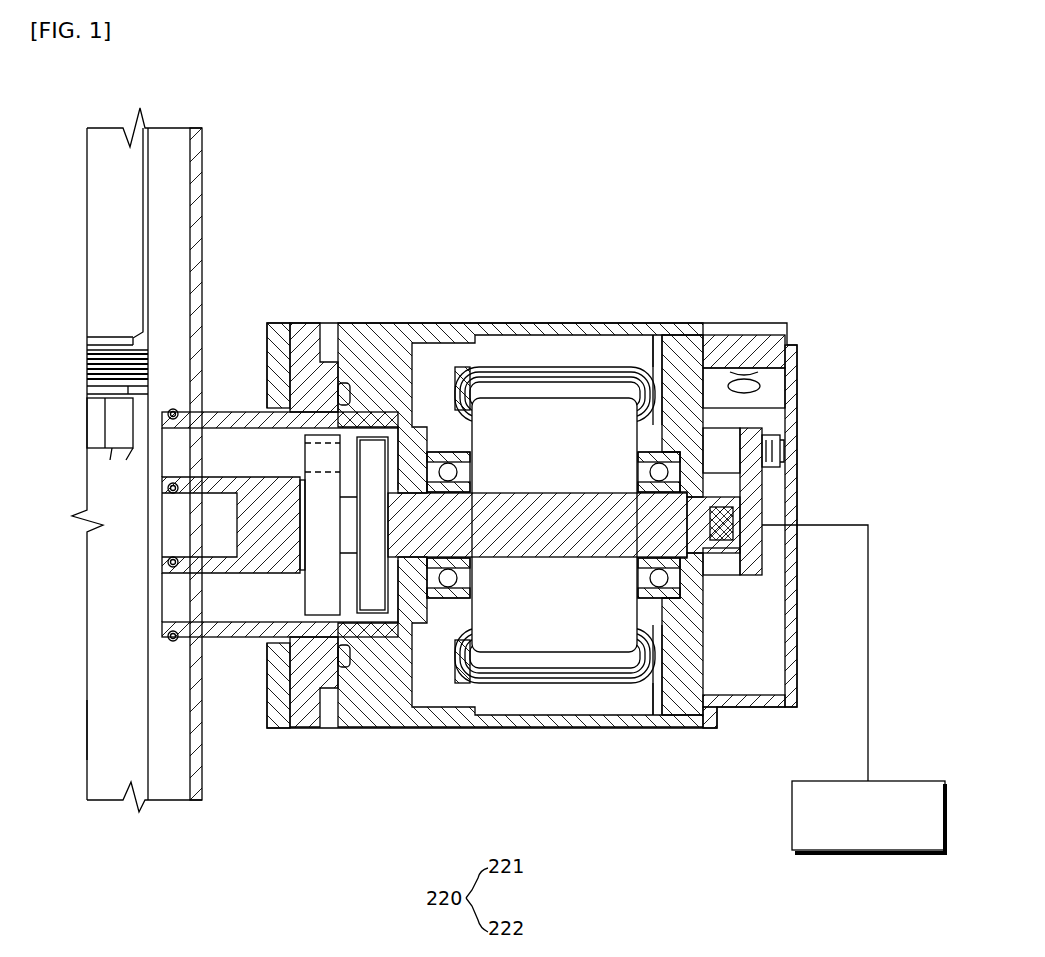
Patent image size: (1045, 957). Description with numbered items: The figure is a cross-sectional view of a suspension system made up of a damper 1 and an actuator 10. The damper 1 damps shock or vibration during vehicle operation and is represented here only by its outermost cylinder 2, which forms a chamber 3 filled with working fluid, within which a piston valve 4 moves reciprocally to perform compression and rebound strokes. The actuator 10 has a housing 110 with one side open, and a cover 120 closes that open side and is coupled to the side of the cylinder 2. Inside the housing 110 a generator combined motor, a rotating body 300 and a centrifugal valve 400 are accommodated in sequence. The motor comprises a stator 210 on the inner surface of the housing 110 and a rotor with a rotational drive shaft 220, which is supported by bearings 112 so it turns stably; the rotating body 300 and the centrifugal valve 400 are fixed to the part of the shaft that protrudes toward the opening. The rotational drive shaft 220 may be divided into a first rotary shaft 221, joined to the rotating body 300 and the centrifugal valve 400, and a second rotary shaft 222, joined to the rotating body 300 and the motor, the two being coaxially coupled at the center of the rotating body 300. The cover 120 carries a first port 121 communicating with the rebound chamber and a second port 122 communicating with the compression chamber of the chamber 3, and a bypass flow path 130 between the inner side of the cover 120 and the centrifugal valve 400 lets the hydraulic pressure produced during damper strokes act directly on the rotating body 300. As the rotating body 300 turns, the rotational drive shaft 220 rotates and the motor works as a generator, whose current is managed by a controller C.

The damper 1 is at (227, 247).
The cylinder 2 is at (195, 165).
The chamber 3 is at (116, 659).
The piston valve 4 is at (106, 248).
The actuator 10 is at (672, 235).
The housing 110 is at (455, 328).
The bearing 112 is at (446, 592).
The cover 120 is at (310, 330).
The first port 121 is at (280, 452).
The second port 122 is at (282, 598).
The bypass flow path 130 is at (322, 432).
The stator 210 is at (565, 367).
The rotational drive shaft 220 is at (552, 535).
The first rotary shaft 221 is at (350, 545).
The second rotary shaft 222 is at (610, 690).
The rotating body 300 is at (384, 622).
The centrifugal valve 400 is at (321, 622).
The controller C is at (922, 781).